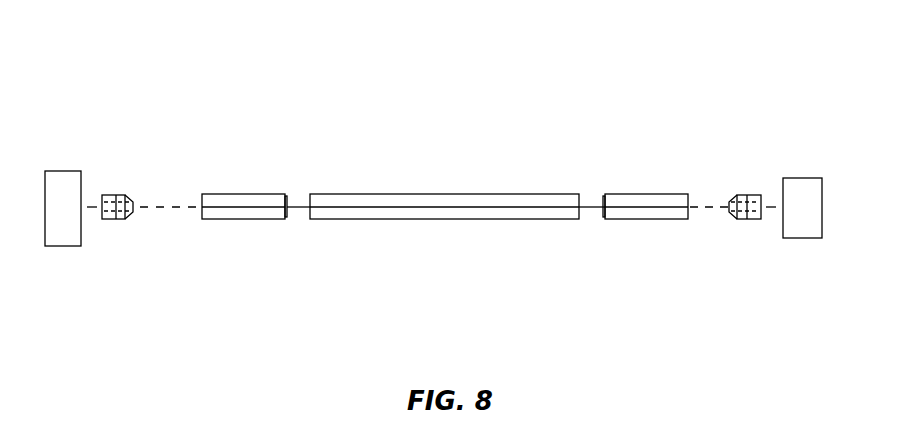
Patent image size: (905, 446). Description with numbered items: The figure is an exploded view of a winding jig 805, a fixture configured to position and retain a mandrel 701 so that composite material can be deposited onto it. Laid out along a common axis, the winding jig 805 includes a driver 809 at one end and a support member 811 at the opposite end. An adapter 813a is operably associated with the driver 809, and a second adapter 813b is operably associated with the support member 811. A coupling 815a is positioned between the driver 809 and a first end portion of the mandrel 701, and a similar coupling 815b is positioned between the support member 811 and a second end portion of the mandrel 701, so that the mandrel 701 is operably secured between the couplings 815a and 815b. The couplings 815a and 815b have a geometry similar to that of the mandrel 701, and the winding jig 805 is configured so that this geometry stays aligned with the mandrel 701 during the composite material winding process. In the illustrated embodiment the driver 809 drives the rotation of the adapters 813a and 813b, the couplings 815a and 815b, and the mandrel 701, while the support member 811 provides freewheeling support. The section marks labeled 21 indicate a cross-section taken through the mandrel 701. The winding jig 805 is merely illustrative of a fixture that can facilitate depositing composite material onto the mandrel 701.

The winding jig 805 is at (246, 71).
The driver 809 is at (80, 247).
The support member 811 is at (801, 238).
The adapter 813a is at (110, 195).
The adapter 813b is at (738, 195).
The coupling 815a is at (237, 219).
The coupling 815b is at (626, 219).
The mandrel 701 is at (512, 219).
The section line 21- 21 is at (367, 177).